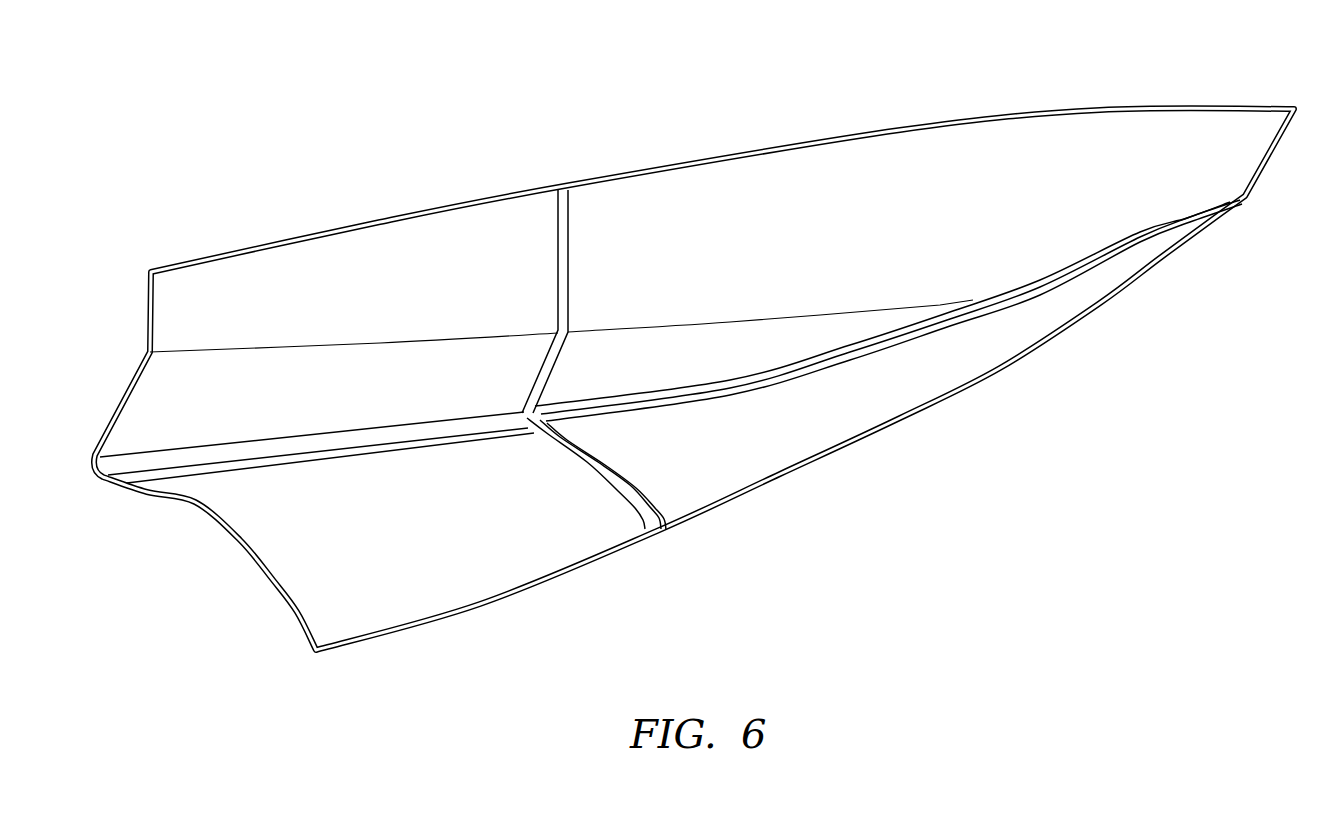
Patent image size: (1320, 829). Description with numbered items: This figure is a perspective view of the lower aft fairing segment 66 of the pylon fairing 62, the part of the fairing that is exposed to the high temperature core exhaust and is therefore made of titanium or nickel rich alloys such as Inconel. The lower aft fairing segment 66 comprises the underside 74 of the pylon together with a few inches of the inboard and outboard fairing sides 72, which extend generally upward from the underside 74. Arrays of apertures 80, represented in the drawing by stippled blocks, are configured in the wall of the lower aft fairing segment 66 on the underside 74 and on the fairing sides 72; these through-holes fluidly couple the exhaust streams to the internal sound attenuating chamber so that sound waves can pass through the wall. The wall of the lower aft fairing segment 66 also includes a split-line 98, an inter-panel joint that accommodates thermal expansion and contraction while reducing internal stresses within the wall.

The pylon fairing 62 is at (694, 352).
The lower aft fairing segment 66 is at (694, 352).
The fairing sides 72 is at (891, 310).
The underside 74 is at (410, 518).
The apertures 80 is at (408, 270).
The split-line 98 is at (603, 521).